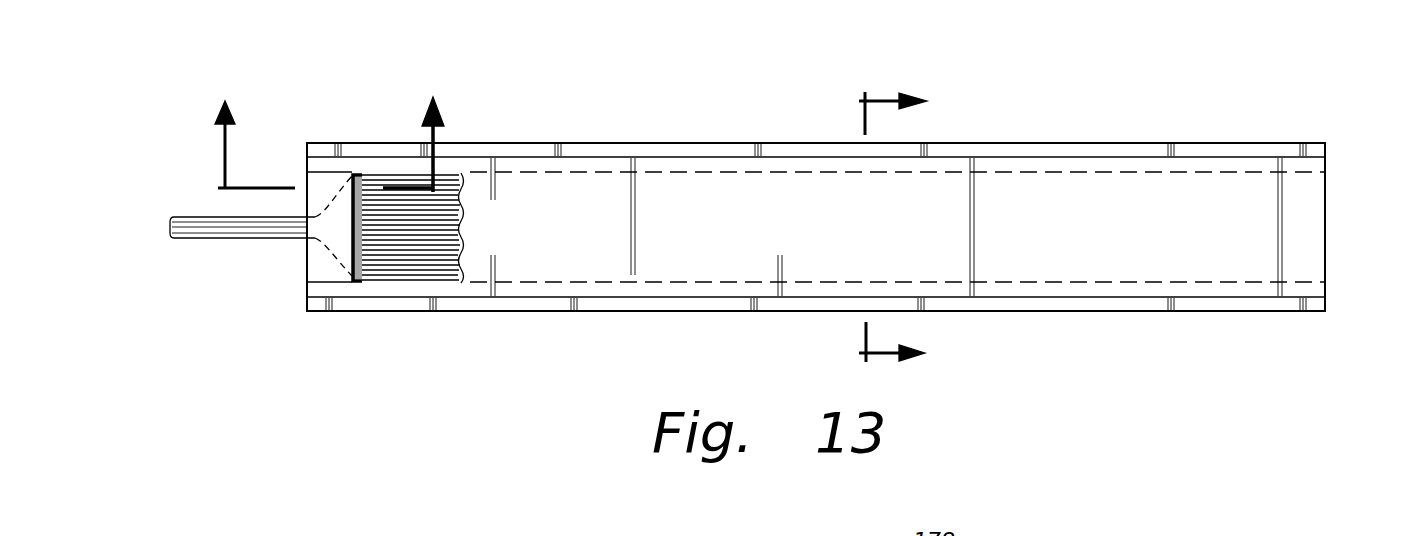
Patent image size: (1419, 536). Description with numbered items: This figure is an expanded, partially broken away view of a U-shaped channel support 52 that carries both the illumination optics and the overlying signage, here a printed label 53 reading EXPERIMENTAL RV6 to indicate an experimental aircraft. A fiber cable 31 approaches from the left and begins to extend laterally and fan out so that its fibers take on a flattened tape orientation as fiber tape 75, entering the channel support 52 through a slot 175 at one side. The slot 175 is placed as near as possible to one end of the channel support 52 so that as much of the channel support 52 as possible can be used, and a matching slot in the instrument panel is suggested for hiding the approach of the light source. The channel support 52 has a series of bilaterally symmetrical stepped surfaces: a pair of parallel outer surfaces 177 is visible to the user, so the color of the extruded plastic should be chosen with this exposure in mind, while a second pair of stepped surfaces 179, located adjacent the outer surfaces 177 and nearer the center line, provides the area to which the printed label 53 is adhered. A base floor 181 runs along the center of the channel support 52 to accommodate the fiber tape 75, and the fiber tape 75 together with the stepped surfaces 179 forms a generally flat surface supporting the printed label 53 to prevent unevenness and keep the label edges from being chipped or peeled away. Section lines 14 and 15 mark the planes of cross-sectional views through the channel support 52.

The section line 14- 14 is at (331, 129).
The section line 15- 15 is at (910, 227).
The fiber cable 31 is at (208, 241).
The channel support 52 is at (623, 142).
The printed label 53 is at (1310, 225).
The fiber tape 75 is at (388, 258).
The slot 175 is at (352, 262).
The outer surfaces 177 is at (798, 148).
The stepped surfaces 179 is at (367, 165).
The base floor 181 is at (318, 187).